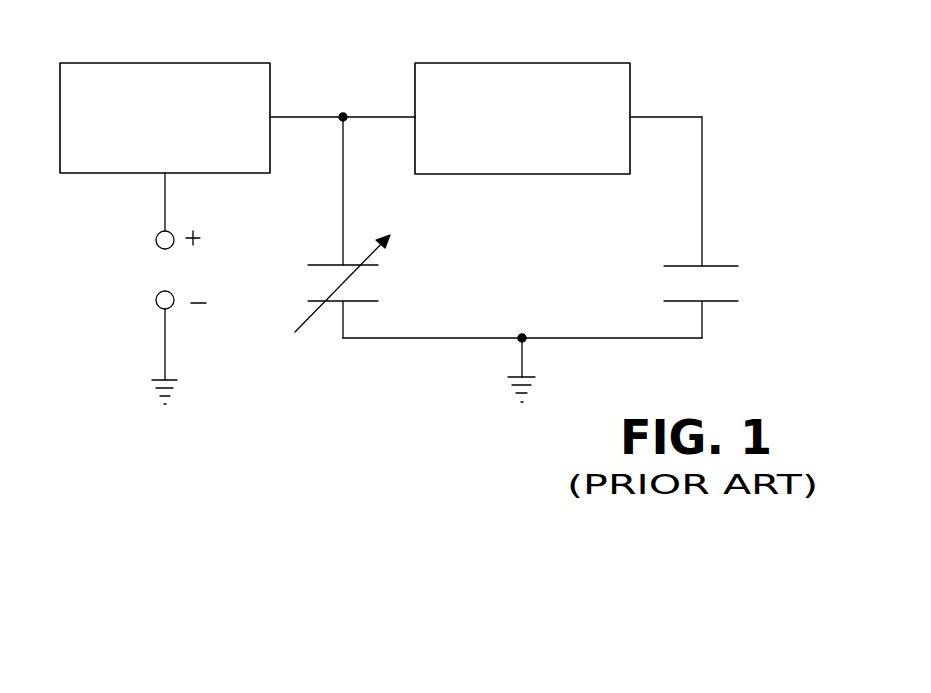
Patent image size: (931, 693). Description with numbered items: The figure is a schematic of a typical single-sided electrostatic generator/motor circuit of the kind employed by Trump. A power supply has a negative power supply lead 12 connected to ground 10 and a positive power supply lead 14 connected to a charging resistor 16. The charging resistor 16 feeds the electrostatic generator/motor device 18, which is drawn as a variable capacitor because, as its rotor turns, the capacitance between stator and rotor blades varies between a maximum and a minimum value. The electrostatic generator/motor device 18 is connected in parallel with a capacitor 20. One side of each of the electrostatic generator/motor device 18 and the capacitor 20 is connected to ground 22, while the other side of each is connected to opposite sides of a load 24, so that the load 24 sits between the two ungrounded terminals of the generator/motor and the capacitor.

The ground 10 is at (172, 379).
The negative power supply lead 12 is at (160, 312).
The positive power supply lead 14 is at (156, 238).
The charging resistor 16 is at (197, 62).
The electrostatic generator/motor device 18 is at (376, 264).
The capacitor 20 is at (727, 266).
The ground 22 is at (530, 376).
The load 24 is at (537, 62).